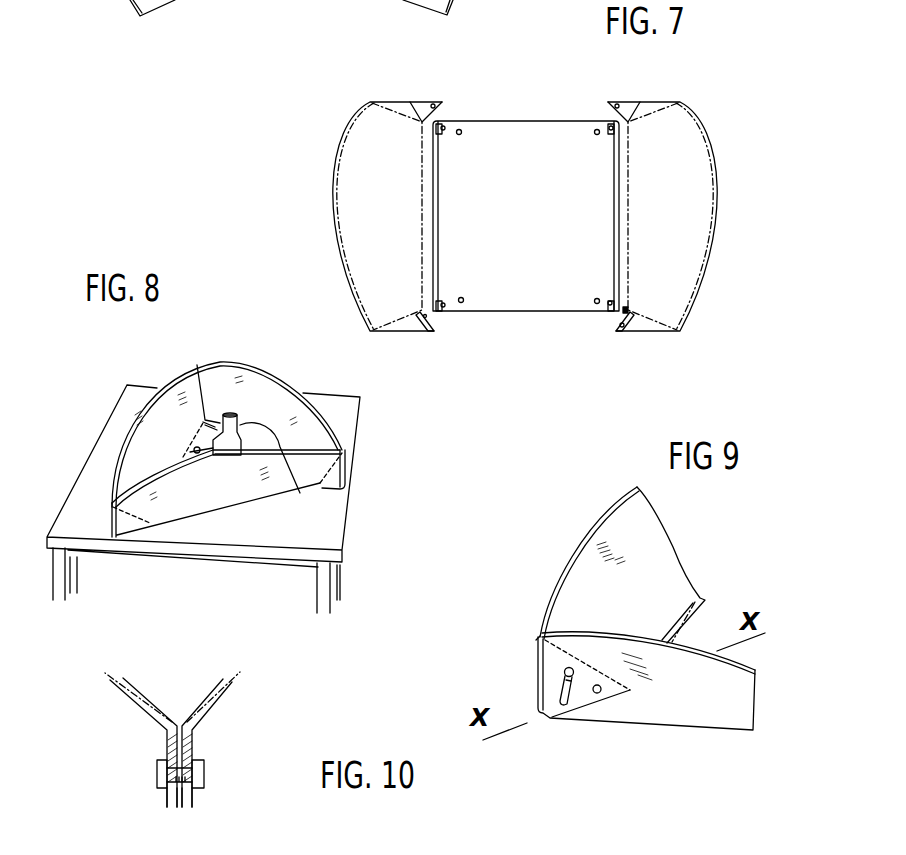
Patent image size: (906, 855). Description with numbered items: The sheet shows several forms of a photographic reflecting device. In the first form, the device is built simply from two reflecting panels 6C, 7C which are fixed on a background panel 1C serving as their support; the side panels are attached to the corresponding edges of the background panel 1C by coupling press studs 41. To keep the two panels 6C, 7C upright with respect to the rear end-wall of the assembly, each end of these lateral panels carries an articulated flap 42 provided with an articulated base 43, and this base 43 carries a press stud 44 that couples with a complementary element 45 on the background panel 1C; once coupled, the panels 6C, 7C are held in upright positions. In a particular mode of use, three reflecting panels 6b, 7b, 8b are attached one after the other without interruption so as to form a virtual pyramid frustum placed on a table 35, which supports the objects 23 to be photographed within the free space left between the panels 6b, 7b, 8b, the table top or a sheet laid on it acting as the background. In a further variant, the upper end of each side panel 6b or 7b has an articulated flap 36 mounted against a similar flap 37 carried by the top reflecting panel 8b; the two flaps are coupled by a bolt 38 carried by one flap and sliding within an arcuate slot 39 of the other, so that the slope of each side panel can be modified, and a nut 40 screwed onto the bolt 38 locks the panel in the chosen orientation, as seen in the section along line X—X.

In FIG. 7, the background panel 1C is at (484, 278).
In FIG. 7, the reflecting panel 6C is at (355, 187).
In FIG. 7, the reflecting panel 7C is at (683, 178).
In FIG. 7, the coupling press studs 41 is at (443, 131).
In FIG. 7, the articulated flap 42 is at (408, 103).
In FIG. 7, the articulated base 43 is at (424, 313).
In FIG. 7, the press stud 44 is at (626, 312).
In FIG. 7, the complementary element 45 is at (596, 134).
In FIG. 8, the table 35 is at (117, 417).
In FIG. 8, the top reflecting panel 8b is at (173, 393).
In FIG. 9, the top reflecting panel 8b is at (623, 523).
In FIG. 10, the top reflecting panel 8b is at (137, 700).
In FIG. 8, the side panel 6b is at (200, 507).
In FIG. 9, the side panel 6b is at (713, 680).
In FIG. 10, the side panel 6b is at (227, 693).
In FIG. 8, the side panel 7b is at (317, 437).
In FIG. 8, the objects to be photographed 23 is at (227, 452).
In FIG. 9, the articulated flap 36 is at (595, 692).
In FIG. 10, the articulated flap 36 is at (193, 800).
In FIG. 9, the flap 37 is at (538, 641).
In FIG. 10, the flap 37 is at (167, 797).
In FIG. 10, the bolt 38 is at (167, 768).
In FIG. 9, the arcuate slot 39 is at (550, 690).
In FIG. 10, the nut 40 is at (207, 764).